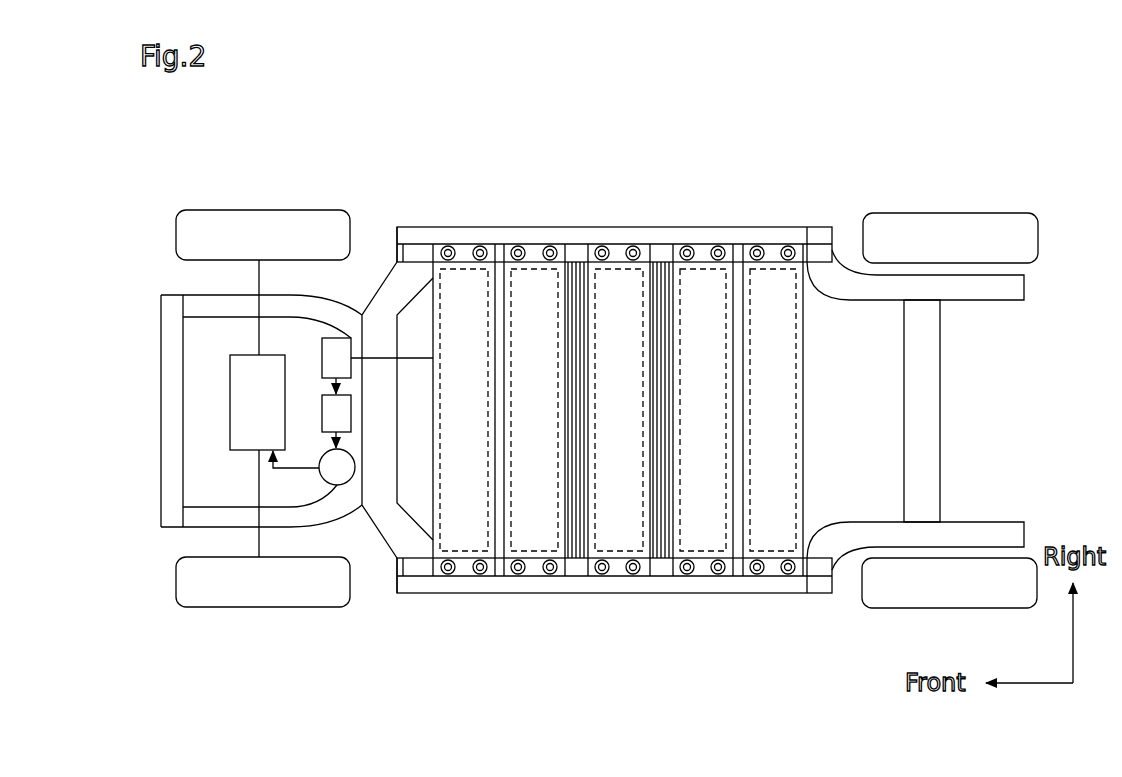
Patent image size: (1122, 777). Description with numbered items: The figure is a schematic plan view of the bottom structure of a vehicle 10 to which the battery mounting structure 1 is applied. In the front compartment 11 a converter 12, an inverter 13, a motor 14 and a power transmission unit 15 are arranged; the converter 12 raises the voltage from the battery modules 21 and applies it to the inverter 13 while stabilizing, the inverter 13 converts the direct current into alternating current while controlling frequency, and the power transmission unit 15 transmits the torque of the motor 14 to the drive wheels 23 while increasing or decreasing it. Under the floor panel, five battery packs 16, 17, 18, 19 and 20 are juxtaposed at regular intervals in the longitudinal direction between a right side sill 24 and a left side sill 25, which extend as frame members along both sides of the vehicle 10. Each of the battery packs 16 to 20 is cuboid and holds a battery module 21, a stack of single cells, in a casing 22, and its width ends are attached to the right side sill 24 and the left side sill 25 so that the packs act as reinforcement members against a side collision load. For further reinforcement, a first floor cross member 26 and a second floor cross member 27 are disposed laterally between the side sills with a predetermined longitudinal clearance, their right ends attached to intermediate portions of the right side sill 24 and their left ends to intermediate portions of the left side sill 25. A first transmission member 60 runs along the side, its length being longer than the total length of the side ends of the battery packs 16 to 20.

The battery mounting structure 1 is at (466, 610).
The vehicle 10 is at (925, 182).
The front compartment 11 is at (205, 460).
The converter 12 is at (333, 338).
The inverter 13 is at (322, 410).
The motor 14 is at (330, 488).
The power transmission unit 15 is at (232, 402).
The battery pack 16 is at (467, 247).
The battery pack 17 is at (539, 247).
The battery pack 18 is at (621, 247).
The battery pack 19 is at (700, 247).
The battery pack 20 is at (778, 232).
The battery module 21 is at (433, 274).
The casing 22 is at (458, 248).
The drive wheels 23 is at (265, 228).
The right side sill 24 is at (816, 232).
The left side sill 25 is at (792, 590).
The first floor cross member 26 is at (577, 580).
The second floor cross member 27 is at (661, 580).
The first transmission member 60 is at (838, 230).